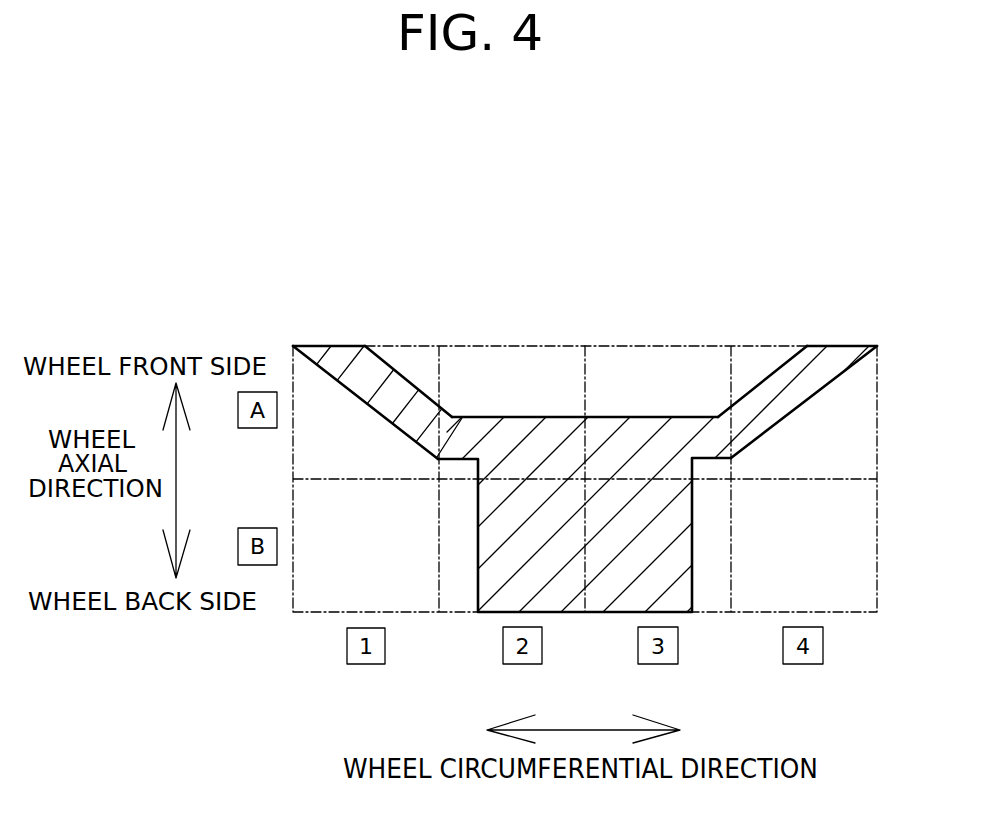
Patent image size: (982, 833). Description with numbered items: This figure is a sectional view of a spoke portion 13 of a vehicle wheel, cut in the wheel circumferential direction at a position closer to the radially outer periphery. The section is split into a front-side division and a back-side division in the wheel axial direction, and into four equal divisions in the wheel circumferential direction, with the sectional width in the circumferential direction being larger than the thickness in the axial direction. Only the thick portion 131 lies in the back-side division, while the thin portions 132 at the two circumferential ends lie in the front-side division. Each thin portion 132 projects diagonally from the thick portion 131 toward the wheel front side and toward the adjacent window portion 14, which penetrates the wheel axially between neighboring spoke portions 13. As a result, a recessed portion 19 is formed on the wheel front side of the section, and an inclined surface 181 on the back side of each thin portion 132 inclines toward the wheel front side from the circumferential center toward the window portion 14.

The spoke portion 13 is at (575, 346).
The thick portion 131 is at (568, 583).
The thin portion 132 is at (415, 348).
The window portion 14 is at (273, 346).
The recessed portion 19 is at (642, 388).
The inclined surface 181 is at (390, 424).